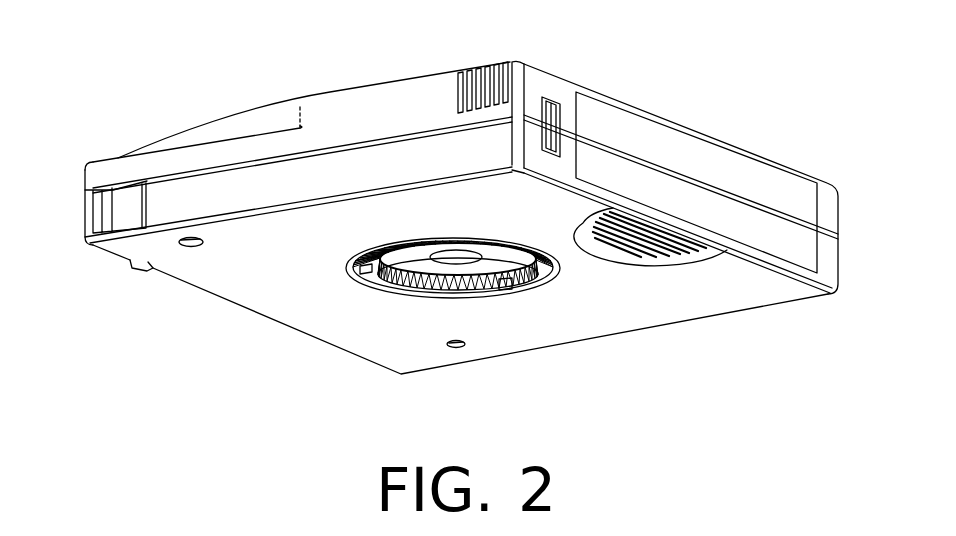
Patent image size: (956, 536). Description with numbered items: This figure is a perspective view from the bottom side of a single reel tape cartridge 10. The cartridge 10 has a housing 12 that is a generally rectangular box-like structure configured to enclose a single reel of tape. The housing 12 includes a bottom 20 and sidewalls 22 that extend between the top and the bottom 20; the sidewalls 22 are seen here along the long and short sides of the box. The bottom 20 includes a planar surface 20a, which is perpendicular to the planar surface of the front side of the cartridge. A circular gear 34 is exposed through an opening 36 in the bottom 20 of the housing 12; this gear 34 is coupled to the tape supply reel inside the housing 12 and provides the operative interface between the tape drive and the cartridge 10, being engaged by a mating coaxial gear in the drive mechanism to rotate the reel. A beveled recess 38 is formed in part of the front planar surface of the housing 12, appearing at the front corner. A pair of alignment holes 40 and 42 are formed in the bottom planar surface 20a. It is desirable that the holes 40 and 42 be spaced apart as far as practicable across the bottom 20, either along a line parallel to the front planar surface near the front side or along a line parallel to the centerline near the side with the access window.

The single reel tape cartridge 10 is at (470, 210).
The housing 12 is at (830, 206).
The bottom 20 is at (524, 338).
The planar surface 20a is at (512, 227).
The sidewalls 22 is at (387, 105).
The circular gear 34 is at (370, 284).
The opening 36 is at (515, 286).
The beveled recess 38 is at (128, 258).
The alignment hole 40 is at (203, 243).
The alignment hole 42 is at (446, 344).